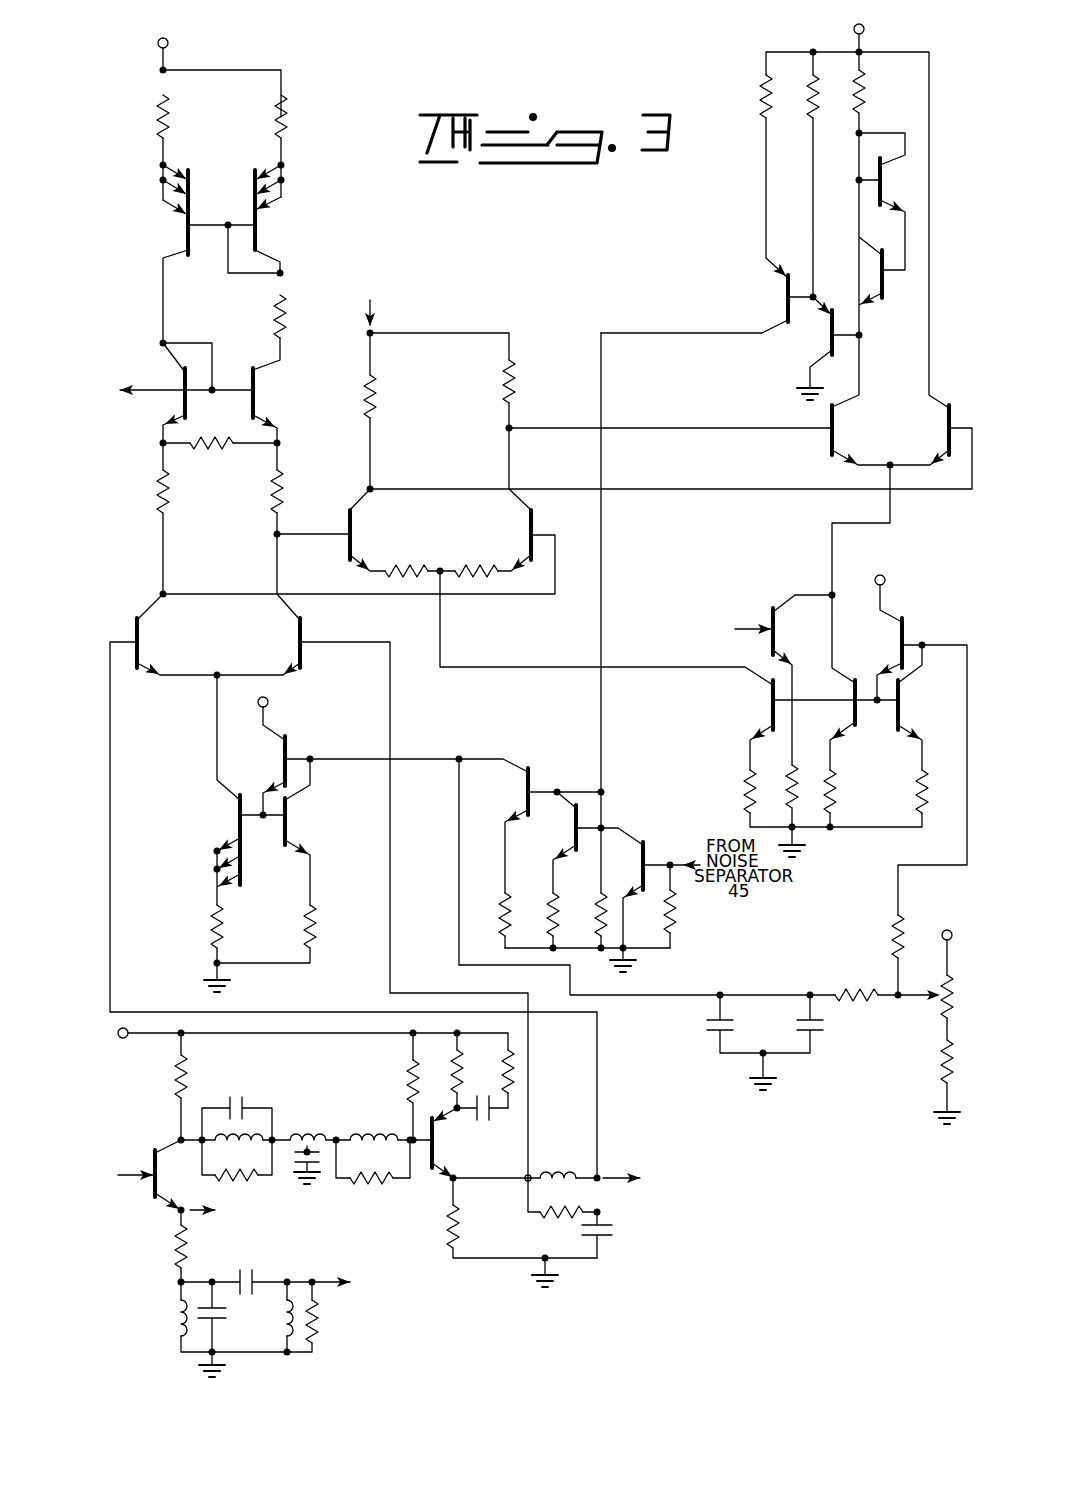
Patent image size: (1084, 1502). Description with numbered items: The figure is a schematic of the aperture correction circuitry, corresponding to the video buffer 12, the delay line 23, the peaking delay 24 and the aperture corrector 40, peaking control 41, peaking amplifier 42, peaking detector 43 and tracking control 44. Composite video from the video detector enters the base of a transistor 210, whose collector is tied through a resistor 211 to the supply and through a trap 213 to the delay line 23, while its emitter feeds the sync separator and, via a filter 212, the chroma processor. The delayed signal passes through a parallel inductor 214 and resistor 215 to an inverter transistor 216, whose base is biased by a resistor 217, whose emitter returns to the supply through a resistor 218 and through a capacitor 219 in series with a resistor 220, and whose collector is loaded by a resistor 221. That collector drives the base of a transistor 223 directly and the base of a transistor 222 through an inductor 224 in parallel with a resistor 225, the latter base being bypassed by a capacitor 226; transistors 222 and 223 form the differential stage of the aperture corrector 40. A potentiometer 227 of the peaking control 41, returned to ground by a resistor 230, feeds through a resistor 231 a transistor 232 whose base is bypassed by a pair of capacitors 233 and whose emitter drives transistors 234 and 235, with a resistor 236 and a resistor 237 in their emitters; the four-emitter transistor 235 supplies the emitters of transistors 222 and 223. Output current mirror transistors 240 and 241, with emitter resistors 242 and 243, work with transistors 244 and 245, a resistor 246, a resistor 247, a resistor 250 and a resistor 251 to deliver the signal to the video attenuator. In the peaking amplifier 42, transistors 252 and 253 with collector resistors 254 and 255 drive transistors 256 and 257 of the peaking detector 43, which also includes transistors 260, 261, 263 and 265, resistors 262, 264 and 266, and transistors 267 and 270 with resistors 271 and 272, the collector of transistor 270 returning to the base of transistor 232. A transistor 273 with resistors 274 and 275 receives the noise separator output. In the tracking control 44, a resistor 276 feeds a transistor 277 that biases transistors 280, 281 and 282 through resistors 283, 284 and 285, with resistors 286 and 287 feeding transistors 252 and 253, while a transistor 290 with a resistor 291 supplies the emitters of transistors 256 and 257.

The video buffer 12 is at (148, 1130).
The delay line 23 is at (309, 1133).
The peaking delay 24 is at (629, 1162).
The aperture corrector 40 is at (320, 195).
The peaking control 41 is at (891, 1095).
The peaking amplifier 42 is at (481, 314).
The peaking detector 43 is at (727, 276).
The tracking control 44 is at (731, 590).
The transistor 210 is at (194, 1183).
The resistor 211 is at (184, 1077).
The filter 212 is at (253, 1334).
The 3.58 MHz trap 213 is at (249, 1134).
The inductor 214 is at (372, 1139).
The resistor 215 is at (362, 1184).
The inverter transistor 216 is at (468, 1157).
The resistor 217 is at (404, 1080).
The resistor 218 is at (451, 1074).
The capacitor 219 is at (480, 1127).
The resistor 220 is at (506, 1075).
The resistor 221 is at (446, 1236).
The transistor 222 is at (175, 644).
The transistor 223 is at (291, 644).
The inductor 224 is at (557, 1176).
The resistor 225 is at (546, 1224).
The capacitor 226 is at (614, 1238).
The potentiometer 227 is at (937, 1030).
The resistor 230 is at (939, 1066).
The resistor 231 is at (851, 985).
The transistor 232 is at (275, 766).
The capacitors 233 is at (778, 1030).
The transistor 234 is at (324, 820).
The transistor 235 is at (231, 820).
The resistor 236 is at (316, 932).
The resistor 237 is at (208, 927).
The transistor 240 is at (175, 247).
The transistor 241 is at (293, 247).
The resistor 242 is at (172, 116).
The resistor 243 is at (288, 114).
The transistor 244 is at (175, 388).
The transistor 245 is at (295, 396).
The resistor 246 is at (286, 314).
The resistor 247 is at (218, 448).
The resistor 250 is at (151, 494).
The resistor 251 is at (283, 493).
The transistor 252 is at (388, 536).
The transistor 253 is at (522, 536).
The resistor 254 is at (376, 396).
The resistor 255 is at (516, 381).
The transistor 256 is at (869, 436).
The transistor 257 is at (939, 436).
The transistor 260 is at (871, 276).
The transistor 261 is at (916, 189).
The resistor 262 is at (865, 88).
The transistor 263 is at (823, 348).
The resistor 264 is at (802, 90).
The transistor 265 is at (778, 310).
The resistor 266 is at (760, 90).
The transistor 267 is at (565, 833).
The transistor 270 is at (516, 796).
The resistor 271 is at (548, 896).
The resistor 272 is at (506, 902).
The transistor 273 is at (635, 868).
The resistor 274 is at (676, 924).
The resistor 275 is at (596, 896).
The resistor 276 is at (892, 931).
The transistor 277 is at (889, 648).
The transistor 280 is at (941, 700).
The transistor 281 is at (846, 696).
The transistor 282 is at (764, 712).
The resistor 283 is at (916, 798).
The resistor 284 is at (835, 782).
The resistor 285 is at (741, 794).
The resistor 286 is at (410, 560).
The resistor 287 is at (456, 565).
The transistor 290 is at (813, 631).
The resistor 291 is at (782, 768).